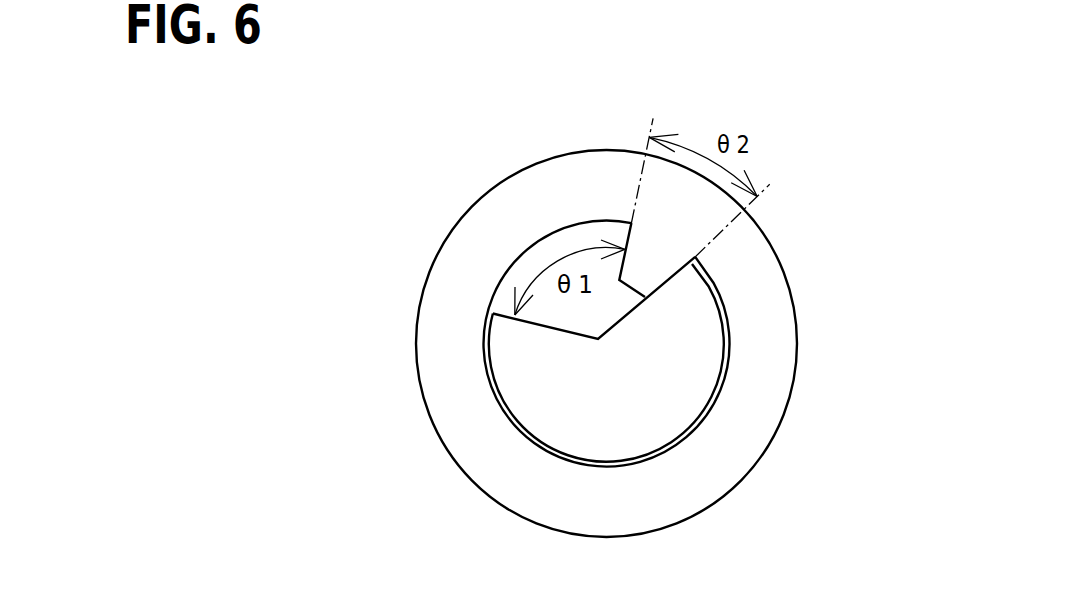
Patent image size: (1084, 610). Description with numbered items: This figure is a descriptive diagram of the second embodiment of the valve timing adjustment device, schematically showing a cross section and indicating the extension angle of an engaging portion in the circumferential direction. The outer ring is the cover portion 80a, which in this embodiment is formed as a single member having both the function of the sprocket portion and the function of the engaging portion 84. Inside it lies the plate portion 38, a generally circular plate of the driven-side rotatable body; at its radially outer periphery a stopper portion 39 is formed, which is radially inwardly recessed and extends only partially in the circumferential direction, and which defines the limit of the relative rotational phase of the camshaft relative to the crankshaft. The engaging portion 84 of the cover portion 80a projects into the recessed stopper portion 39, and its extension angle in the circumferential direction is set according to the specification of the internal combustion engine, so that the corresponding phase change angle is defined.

The cover portion 80a is at (470, 237).
The plate portion 38 is at (681, 336).
The stopper portion 39 is at (503, 316).
The engaging portion 84 is at (647, 259).